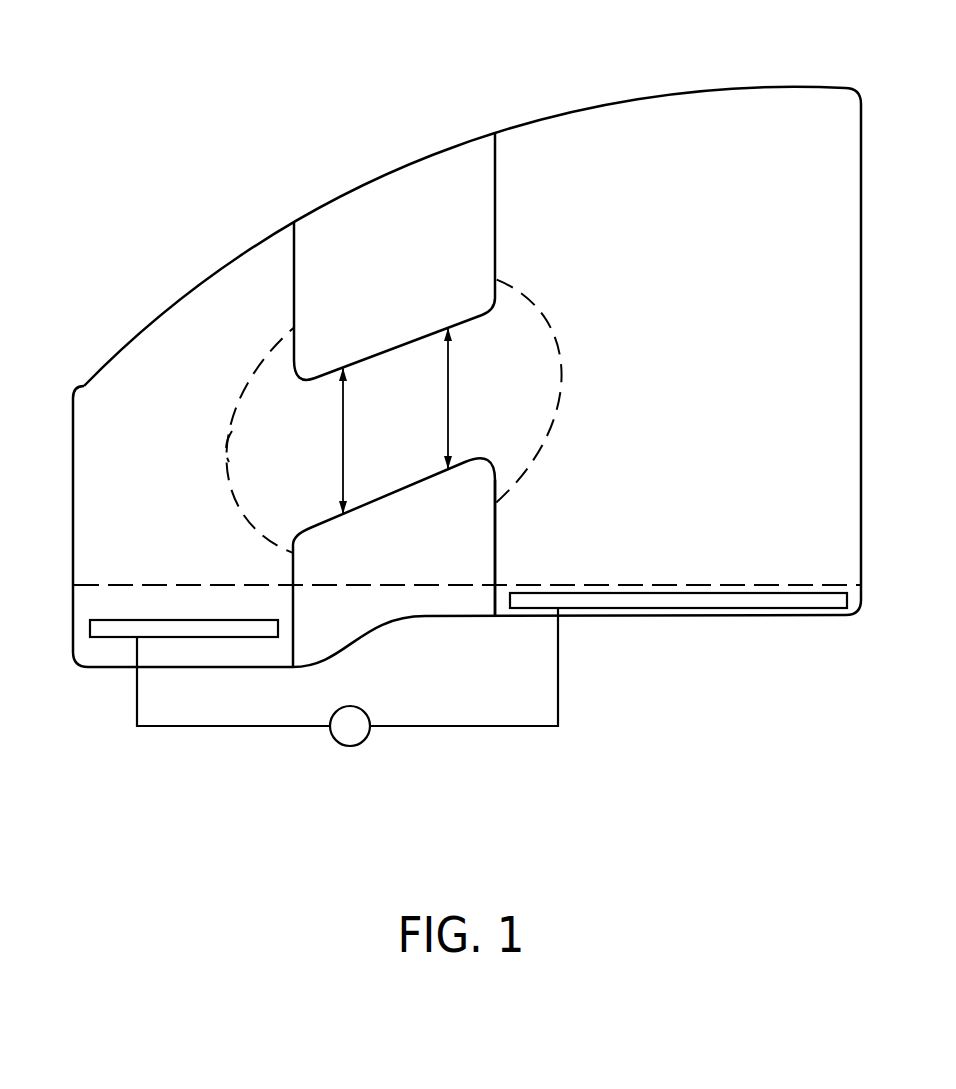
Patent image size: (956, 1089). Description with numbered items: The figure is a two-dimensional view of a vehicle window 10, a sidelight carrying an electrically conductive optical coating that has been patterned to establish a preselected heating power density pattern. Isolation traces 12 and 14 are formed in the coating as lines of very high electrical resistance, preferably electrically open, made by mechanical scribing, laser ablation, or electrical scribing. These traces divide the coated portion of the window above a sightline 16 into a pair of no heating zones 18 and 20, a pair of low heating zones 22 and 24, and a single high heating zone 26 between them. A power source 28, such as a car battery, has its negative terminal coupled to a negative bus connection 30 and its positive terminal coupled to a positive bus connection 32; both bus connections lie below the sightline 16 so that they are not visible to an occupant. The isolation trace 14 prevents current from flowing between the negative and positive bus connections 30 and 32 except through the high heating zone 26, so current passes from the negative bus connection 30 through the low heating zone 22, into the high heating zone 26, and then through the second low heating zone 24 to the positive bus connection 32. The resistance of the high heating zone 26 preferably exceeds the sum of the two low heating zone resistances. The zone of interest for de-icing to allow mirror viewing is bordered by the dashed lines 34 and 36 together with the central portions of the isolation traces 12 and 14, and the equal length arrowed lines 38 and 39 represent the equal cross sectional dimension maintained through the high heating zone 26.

The vehicle window 10 is at (467, 337).
The isolation trace 12 is at (497, 160).
The isolation trace 14 is at (496, 550).
The sightline 16 is at (95, 588).
The no heating zone 18 is at (380, 284).
The no heating zone 20 is at (380, 558).
The low heating zone 22 is at (677, 375).
The low heating zone 24 is at (141, 515).
The high heating zone 26 is at (395, 421).
The power source 28 is at (341, 745).
The negative bus connection 30 is at (765, 600).
The positive bus connection 32 is at (123, 630).
The dashed line 34 is at (540, 322).
The dashed line 36 is at (230, 431).
The arrowed line 38 is at (449, 399).
The arrowed line 39 is at (342, 483).